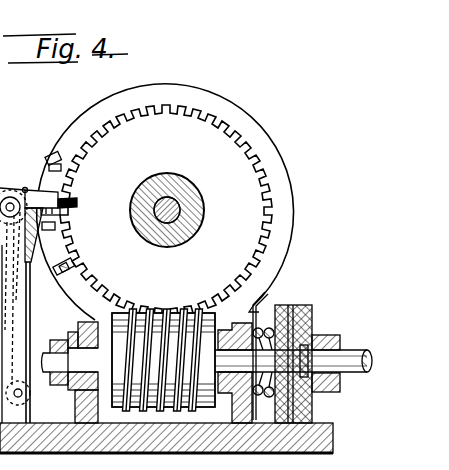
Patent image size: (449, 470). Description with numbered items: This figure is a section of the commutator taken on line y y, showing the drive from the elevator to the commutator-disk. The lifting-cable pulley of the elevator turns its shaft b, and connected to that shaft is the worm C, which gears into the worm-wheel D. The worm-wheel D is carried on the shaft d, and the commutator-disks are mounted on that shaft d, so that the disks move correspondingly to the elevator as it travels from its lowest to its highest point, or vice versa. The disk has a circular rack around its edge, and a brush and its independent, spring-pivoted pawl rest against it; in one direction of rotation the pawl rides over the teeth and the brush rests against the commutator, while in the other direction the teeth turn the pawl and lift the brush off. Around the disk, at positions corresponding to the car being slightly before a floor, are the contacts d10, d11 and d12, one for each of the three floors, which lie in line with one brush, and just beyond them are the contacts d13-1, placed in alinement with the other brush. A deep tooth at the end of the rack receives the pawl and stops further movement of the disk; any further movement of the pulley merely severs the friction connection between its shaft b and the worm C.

The worm-wheel D is at (253, 166).
The shaft of the worm-wheel d is at (170, 210).
The contact d13-1 is at (62, 160).
The contact d12 is at (60, 191).
The contact d11 is at (56, 226).
The contact d10 is at (68, 272).
The worm C is at (163, 360).
The shaft of the lifting-cable pulley b is at (368, 352).
The section line y y is at (218, 0).